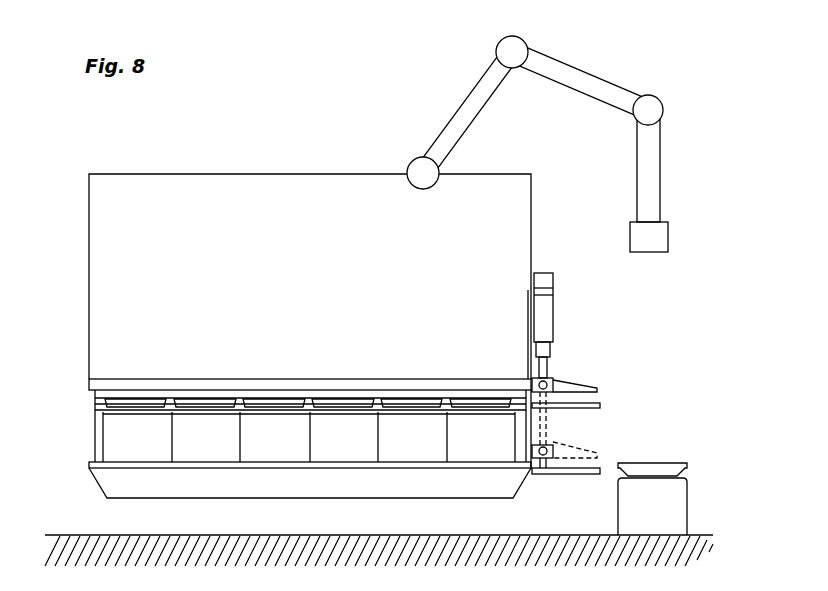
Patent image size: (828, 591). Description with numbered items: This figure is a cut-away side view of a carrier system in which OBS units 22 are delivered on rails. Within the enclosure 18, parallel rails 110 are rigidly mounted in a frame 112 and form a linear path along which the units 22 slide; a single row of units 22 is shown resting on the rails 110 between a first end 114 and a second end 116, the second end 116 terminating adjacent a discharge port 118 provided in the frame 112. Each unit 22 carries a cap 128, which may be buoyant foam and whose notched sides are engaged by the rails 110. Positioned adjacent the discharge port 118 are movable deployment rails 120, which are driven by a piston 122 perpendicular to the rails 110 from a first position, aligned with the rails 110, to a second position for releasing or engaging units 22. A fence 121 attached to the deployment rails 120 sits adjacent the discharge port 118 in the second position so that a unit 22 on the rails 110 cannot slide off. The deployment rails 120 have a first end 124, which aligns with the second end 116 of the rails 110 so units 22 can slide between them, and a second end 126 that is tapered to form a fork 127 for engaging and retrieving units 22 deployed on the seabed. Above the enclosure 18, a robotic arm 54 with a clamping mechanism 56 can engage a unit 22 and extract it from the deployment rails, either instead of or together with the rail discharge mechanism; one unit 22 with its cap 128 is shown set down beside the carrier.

The cabinet housing 18 is at (197, 173).
The OBS unit 22 is at (132, 425).
The robotic arm 54 is at (470, 83).
The clamping mechanism 56 is at (630, 237).
The rails 110 is at (423, 407).
The frame 112 is at (92, 432).
The first end 114 is at (102, 372).
The second end 116 is at (522, 370).
The discharge port 118 is at (556, 352).
The deployment rails 120 is at (556, 378).
The fence 121 is at (553, 300).
The piston 122 is at (553, 280).
The first end 124 is at (548, 412).
The second end 126 is at (587, 392).
The fork 127 is at (587, 383).
The cap 128 is at (96, 398).